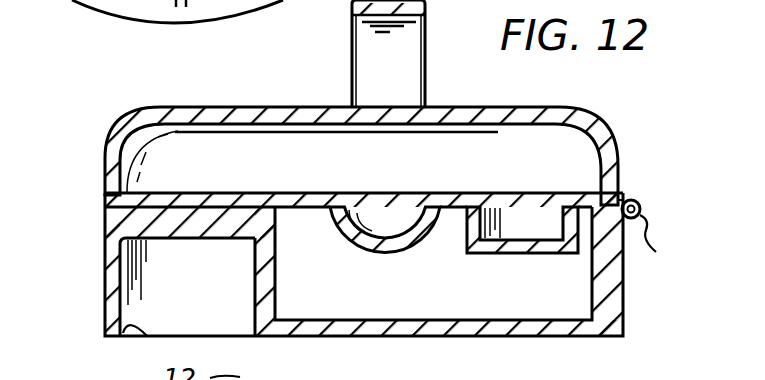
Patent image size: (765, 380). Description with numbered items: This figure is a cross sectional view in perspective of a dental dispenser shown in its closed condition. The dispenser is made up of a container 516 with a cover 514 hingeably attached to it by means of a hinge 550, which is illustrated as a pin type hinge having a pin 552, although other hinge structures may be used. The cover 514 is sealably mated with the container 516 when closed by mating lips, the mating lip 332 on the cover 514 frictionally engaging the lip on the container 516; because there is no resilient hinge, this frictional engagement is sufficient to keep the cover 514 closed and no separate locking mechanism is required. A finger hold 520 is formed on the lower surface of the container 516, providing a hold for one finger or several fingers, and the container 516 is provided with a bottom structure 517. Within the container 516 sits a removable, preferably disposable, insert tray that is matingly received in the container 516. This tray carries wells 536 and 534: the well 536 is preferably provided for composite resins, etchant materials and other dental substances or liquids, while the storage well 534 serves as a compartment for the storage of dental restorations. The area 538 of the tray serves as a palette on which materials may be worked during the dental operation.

The cover 514 is at (112, 153).
The mating lip 332 is at (108, 200).
The container 516 is at (105, 272).
The finger hold 520 is at (145, 337).
The palette area 538 is at (263, 190).
The well 536 is at (412, 225).
The storage well 534 is at (506, 208).
The bottom structure 517 is at (467, 340).
The hinge 550 is at (638, 200).
The pin 552 is at (659, 251).